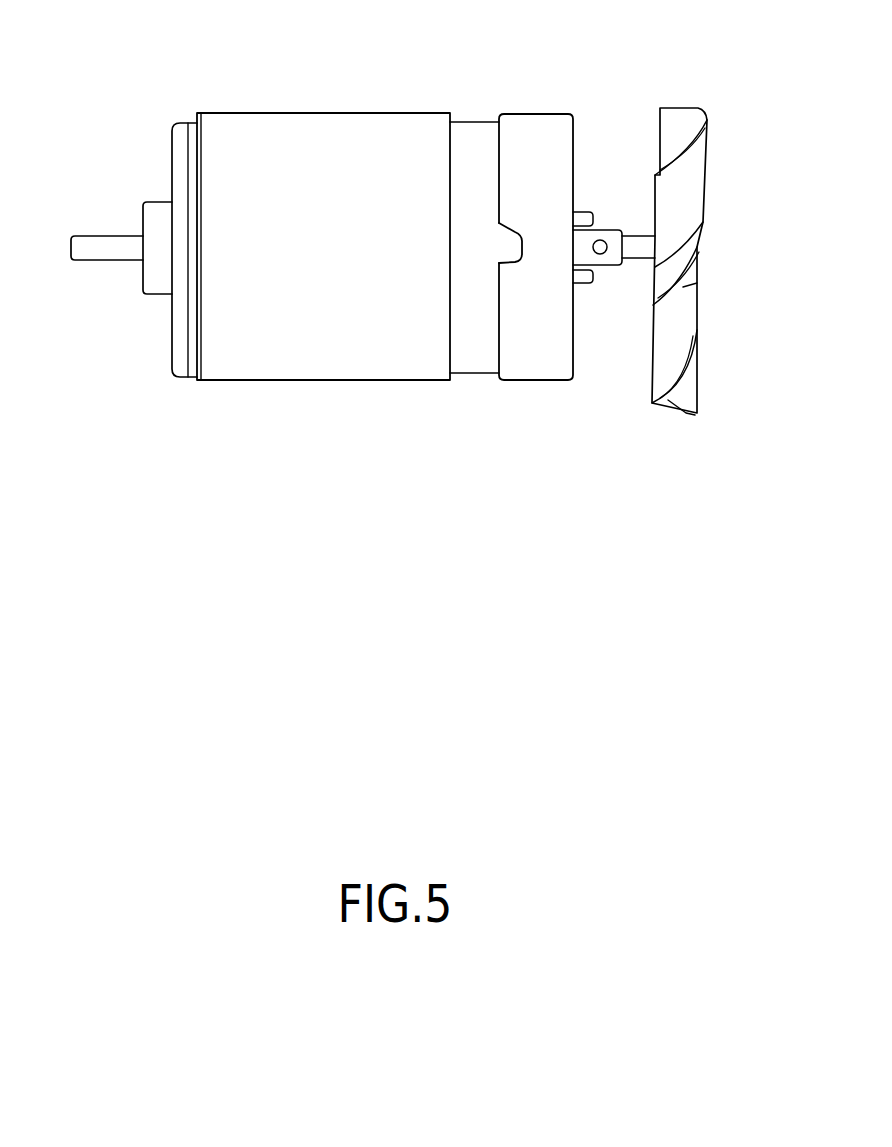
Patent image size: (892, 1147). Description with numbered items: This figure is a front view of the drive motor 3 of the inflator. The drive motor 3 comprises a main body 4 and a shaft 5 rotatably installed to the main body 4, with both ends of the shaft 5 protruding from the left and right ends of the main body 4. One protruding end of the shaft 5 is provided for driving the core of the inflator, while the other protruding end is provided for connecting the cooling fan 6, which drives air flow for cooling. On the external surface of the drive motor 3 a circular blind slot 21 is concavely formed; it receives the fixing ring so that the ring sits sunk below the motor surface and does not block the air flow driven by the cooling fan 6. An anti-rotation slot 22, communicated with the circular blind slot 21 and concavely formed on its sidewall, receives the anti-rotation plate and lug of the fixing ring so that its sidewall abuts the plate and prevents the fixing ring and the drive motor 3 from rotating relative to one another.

The drive motor 3 is at (338, 127).
The main body 4 is at (339, 353).
The shaft 5 is at (113, 248).
The circular blind slot 21 is at (473, 122).
The anti-rotation slot 22 is at (512, 253).
The cooling fan 6 is at (683, 171).